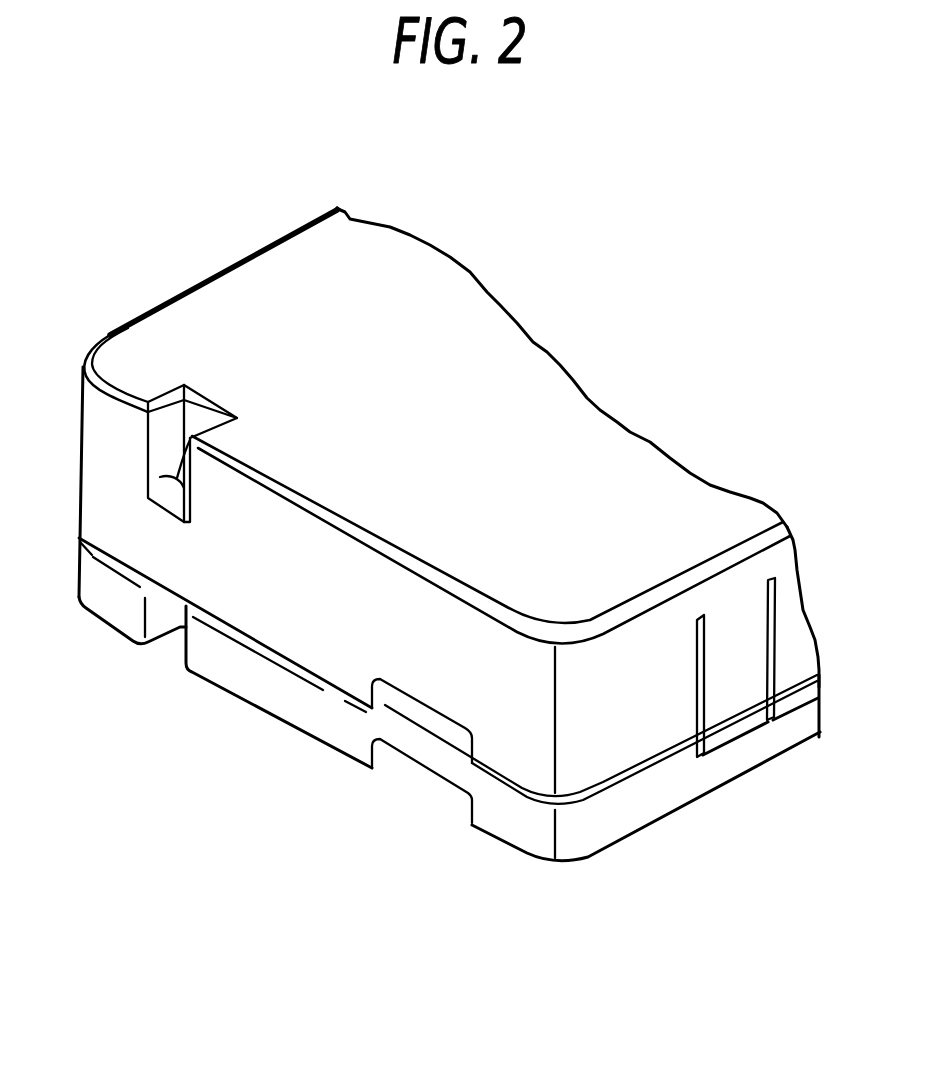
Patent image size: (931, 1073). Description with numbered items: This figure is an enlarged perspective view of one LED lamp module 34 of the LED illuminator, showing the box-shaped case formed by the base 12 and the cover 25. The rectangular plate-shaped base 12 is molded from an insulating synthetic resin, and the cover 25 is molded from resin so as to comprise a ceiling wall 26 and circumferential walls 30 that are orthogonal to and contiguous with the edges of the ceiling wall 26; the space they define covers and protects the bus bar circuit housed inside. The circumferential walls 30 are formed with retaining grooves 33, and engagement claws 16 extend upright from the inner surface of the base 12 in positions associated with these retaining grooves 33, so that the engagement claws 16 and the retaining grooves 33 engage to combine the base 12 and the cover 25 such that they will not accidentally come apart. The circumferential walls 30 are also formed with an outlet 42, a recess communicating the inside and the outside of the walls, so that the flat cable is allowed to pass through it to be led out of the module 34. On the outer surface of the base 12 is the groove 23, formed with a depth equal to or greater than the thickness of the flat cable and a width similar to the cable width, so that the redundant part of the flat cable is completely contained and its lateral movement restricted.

The base 12 is at (712, 806).
The engagement claw 16 is at (160, 477).
The groove 23 is at (433, 772).
The cover 25 is at (245, 250).
The ceiling wall 26 is at (427, 278).
The circumferential wall 30 is at (597, 740).
The retaining groove 33 is at (167, 448).
The LED lamp module 34 is at (553, 317).
The outlet 42 is at (408, 703).